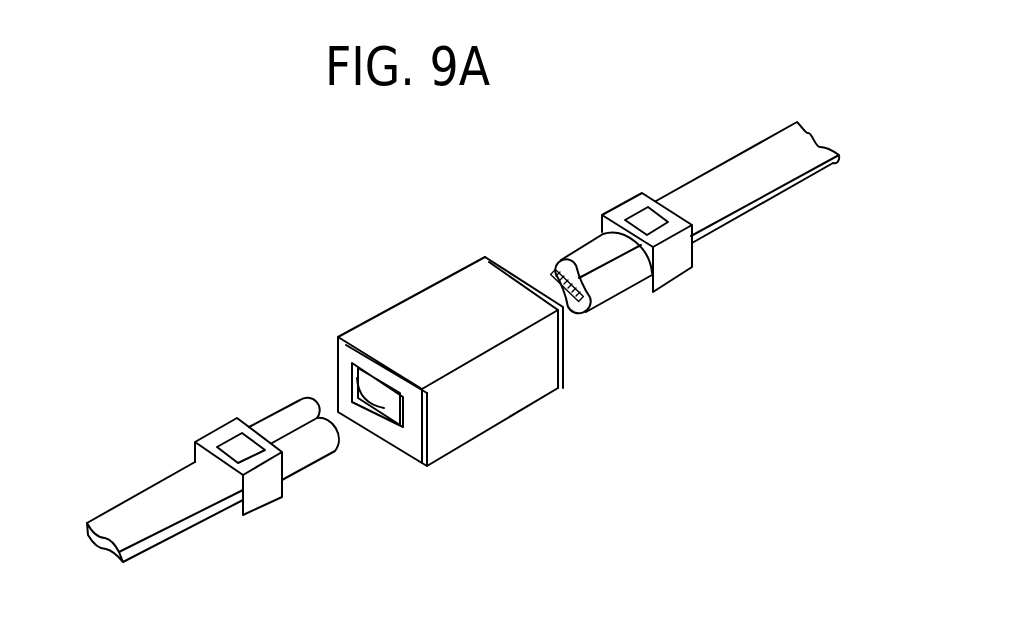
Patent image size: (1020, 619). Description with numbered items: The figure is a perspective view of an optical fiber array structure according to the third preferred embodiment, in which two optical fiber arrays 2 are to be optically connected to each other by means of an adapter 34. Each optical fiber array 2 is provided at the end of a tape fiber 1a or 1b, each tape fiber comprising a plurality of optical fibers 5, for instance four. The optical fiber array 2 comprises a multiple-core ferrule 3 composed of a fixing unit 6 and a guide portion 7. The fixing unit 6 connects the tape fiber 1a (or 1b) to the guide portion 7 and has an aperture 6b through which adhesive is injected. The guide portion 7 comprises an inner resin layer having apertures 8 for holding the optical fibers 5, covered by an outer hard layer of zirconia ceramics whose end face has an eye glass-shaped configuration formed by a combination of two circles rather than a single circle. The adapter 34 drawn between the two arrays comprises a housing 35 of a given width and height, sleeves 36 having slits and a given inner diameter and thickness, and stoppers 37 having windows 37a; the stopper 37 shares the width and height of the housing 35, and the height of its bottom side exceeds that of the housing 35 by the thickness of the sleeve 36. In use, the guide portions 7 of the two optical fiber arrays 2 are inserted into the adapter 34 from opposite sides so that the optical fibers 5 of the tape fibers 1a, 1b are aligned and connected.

The tape fiber 1a is at (718, 170).
The tape fiber 1b is at (115, 508).
The optical fiber array 2 is at (575, 230).
The multiple-core ferrule 3 is at (737, 298).
The optical fiber 5 is at (571, 311).
The fixing unit 6 is at (428, 391).
The aperture 6b is at (235, 447).
The guide portion 7 is at (627, 277).
The aperture 8 is at (550, 272).
The adapter 34 is at (405, 258).
The housing 35 is at (525, 387).
The sleeve 36 is at (369, 379).
The stopper 37 is at (494, 448).
The window 37a is at (292, 340).